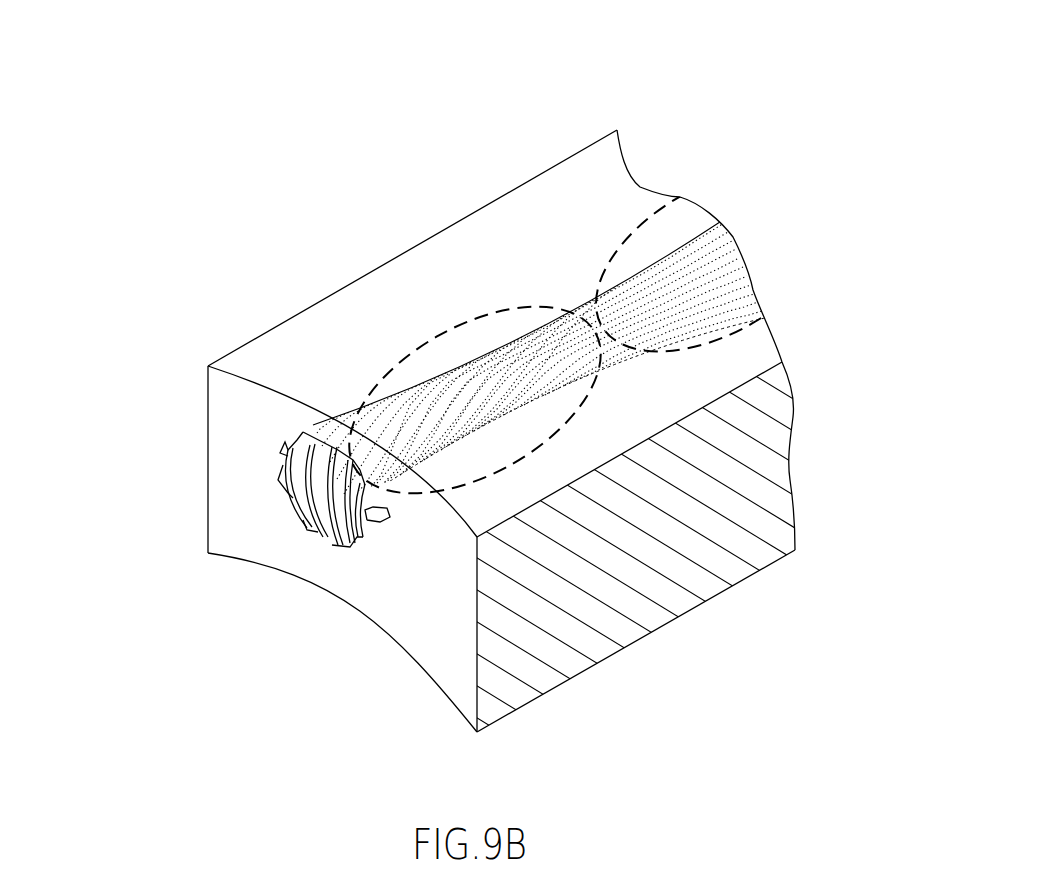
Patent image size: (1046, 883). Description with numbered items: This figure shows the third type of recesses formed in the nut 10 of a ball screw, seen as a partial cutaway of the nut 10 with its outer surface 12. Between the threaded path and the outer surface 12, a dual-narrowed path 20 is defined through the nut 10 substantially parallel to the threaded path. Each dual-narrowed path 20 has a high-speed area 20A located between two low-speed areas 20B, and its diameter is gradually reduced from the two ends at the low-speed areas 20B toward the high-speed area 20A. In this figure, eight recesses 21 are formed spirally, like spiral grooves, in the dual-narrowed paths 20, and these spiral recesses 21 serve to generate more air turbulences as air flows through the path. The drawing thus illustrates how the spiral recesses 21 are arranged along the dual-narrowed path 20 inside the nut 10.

The nut 10 is at (327, 300).
The outer surface 12 is at (431, 278).
The dual-narrowed path 20 is at (252, 461).
The high-speed area 20A is at (633, 232).
The low-speed area 20B is at (508, 305).
The recess 21 is at (293, 454).